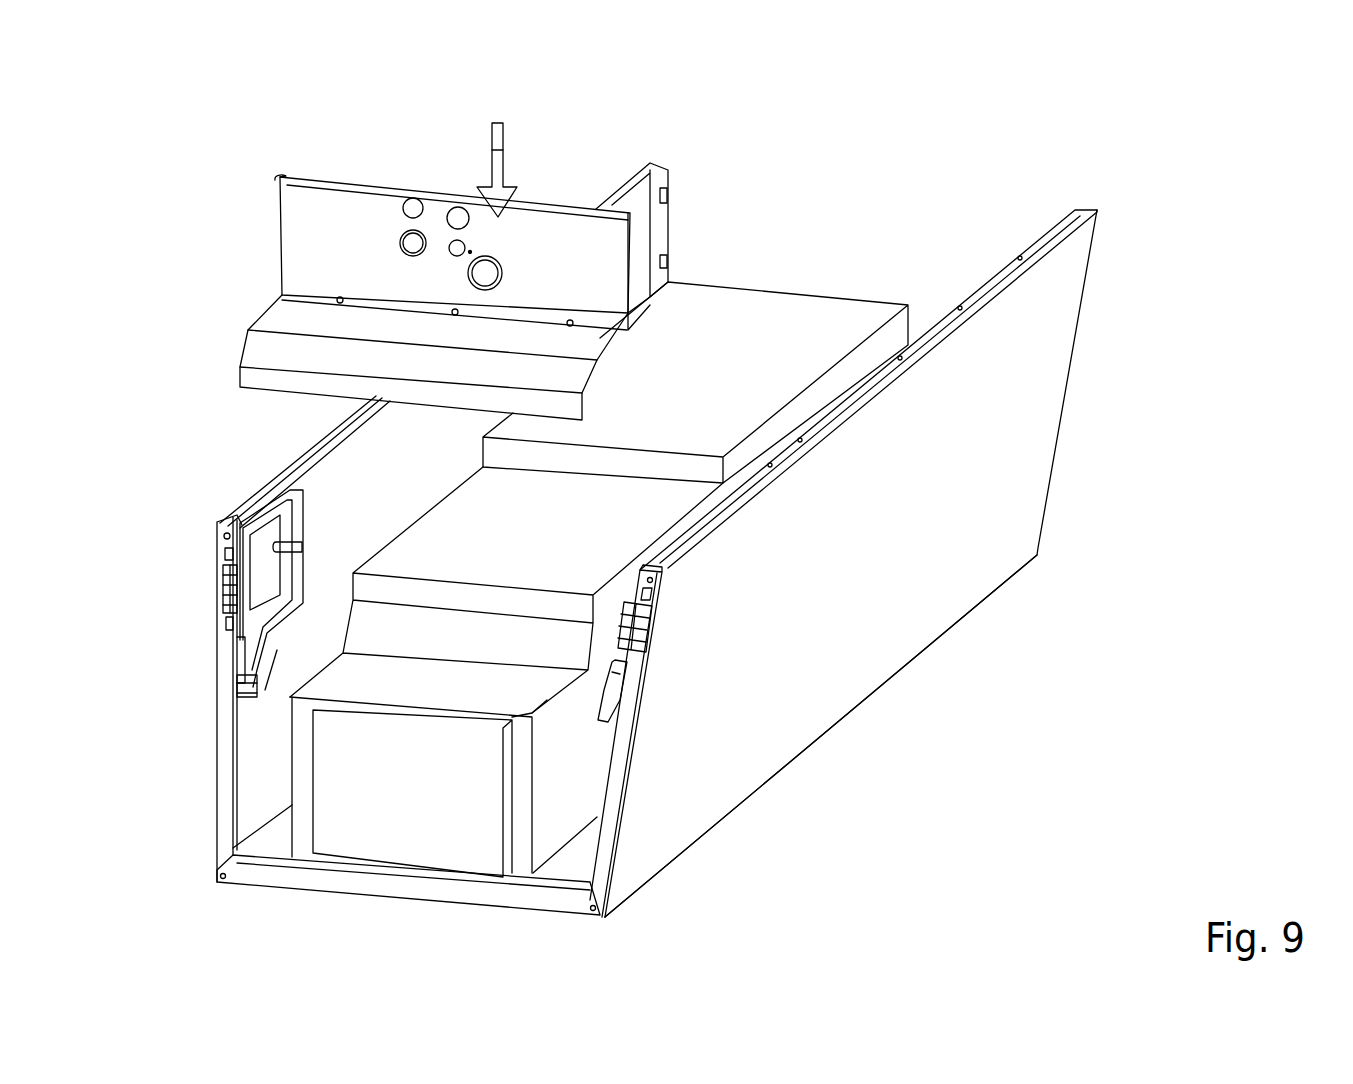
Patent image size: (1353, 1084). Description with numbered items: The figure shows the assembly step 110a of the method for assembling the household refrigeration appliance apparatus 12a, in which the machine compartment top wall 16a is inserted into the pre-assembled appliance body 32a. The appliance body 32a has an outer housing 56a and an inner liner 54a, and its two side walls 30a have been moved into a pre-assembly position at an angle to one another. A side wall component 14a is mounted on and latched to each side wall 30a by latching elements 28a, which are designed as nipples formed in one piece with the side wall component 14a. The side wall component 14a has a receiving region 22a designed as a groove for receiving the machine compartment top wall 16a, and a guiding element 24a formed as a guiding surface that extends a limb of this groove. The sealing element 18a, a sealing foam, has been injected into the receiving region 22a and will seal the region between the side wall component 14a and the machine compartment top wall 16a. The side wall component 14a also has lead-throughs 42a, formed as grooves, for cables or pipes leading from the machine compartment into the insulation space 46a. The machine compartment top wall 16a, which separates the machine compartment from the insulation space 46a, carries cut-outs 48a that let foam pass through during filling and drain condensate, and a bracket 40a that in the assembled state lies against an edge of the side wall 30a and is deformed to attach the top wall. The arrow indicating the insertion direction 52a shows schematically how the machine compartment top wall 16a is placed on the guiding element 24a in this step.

The household refrigeration appliance apparatus 12a is at (876, 727).
The side wall component 14a is at (277, 525).
The machine compartment top wall 16a is at (338, 248).
The sealing element 18a is at (240, 683).
The receiving region 22a is at (238, 672).
The guiding element 24a is at (237, 693).
The latching element 28a is at (265, 690).
The side wall 30a is at (903, 589).
The appliance body 32a is at (708, 853).
The bracket 40a is at (285, 177).
The lead-through 42a is at (275, 548).
The insulation space 46a is at (698, 245).
The cut-out 48a is at (485, 273).
The insertion direction 52a is at (495, 157).
The inner liner 54a is at (825, 327).
The outer housing 56a is at (1003, 410).
The insertion direction arrow 110a is at (468, 128).